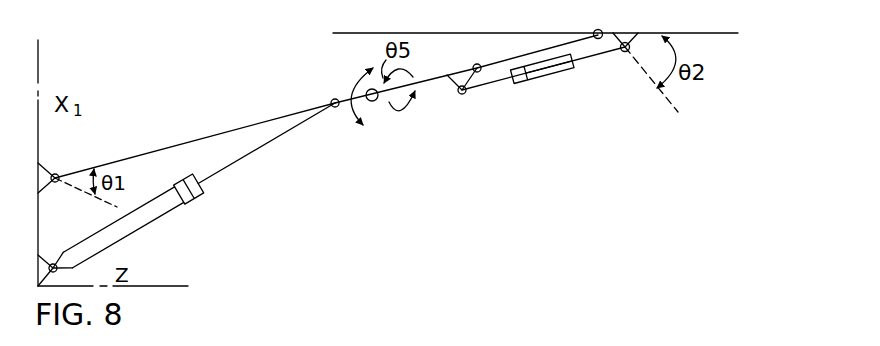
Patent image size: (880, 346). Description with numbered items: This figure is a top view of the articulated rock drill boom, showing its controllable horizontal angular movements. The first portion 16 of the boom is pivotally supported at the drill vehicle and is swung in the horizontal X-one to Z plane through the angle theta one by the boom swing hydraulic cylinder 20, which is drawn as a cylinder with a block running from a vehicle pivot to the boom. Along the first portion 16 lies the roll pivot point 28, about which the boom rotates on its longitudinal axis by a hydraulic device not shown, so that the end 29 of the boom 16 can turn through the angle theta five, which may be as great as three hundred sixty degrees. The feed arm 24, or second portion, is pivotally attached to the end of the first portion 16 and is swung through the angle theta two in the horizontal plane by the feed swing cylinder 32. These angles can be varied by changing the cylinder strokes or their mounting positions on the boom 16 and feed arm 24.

The first portion of the boom 16 is at (211, 136).
The boom swing hydraulic cylinder 20 is at (162, 216).
The feed arm 24 is at (692, 33).
The roll pivot point 28 is at (377, 104).
The end of boom 29 is at (423, 83).
The feed swing cylinder 32 is at (544, 74).